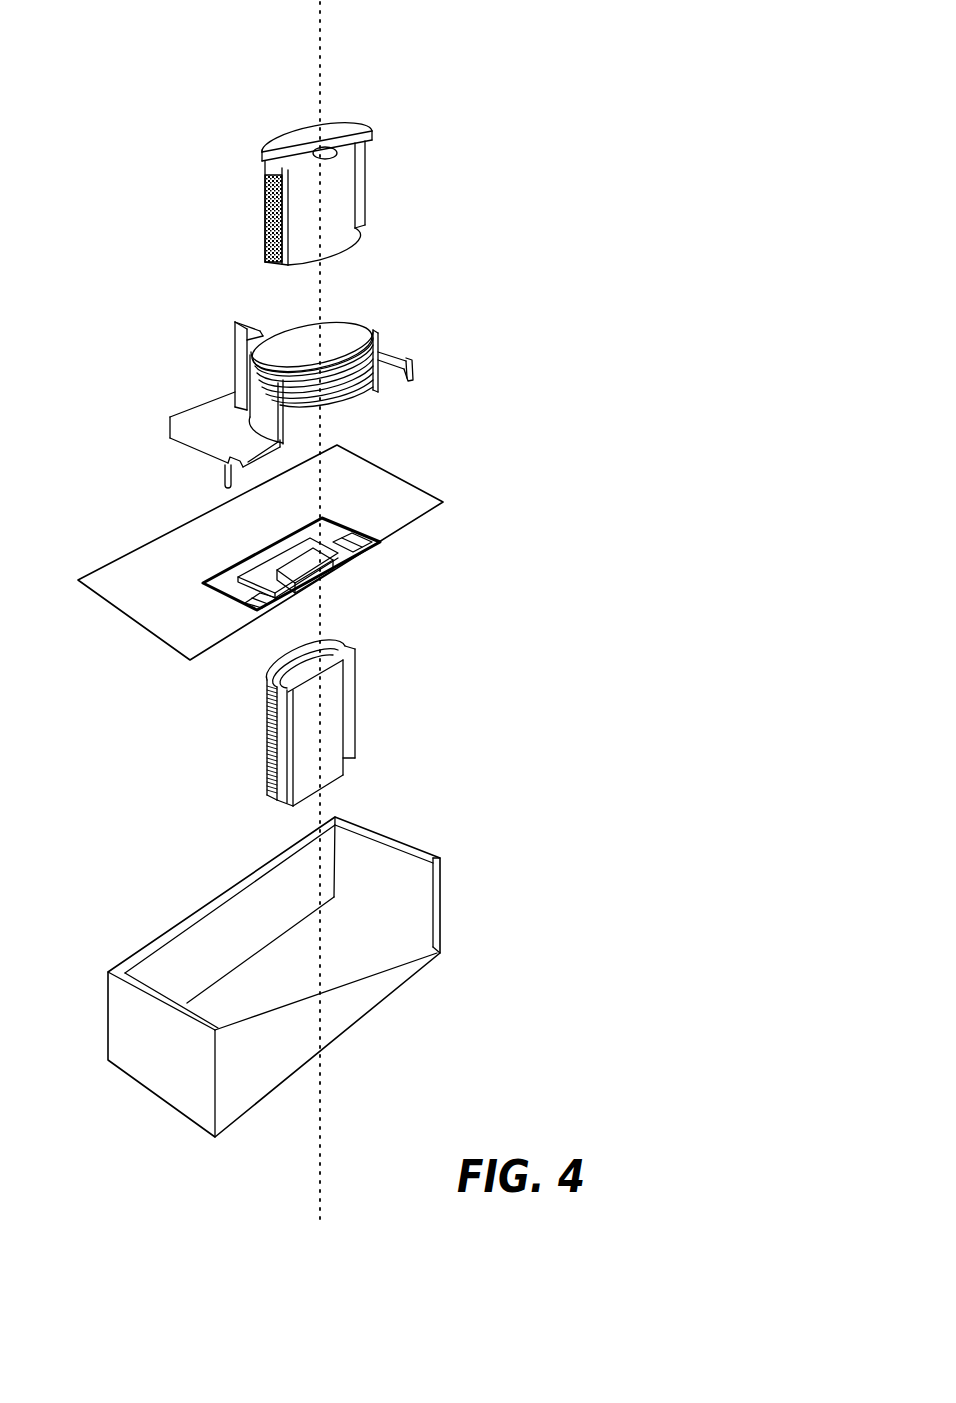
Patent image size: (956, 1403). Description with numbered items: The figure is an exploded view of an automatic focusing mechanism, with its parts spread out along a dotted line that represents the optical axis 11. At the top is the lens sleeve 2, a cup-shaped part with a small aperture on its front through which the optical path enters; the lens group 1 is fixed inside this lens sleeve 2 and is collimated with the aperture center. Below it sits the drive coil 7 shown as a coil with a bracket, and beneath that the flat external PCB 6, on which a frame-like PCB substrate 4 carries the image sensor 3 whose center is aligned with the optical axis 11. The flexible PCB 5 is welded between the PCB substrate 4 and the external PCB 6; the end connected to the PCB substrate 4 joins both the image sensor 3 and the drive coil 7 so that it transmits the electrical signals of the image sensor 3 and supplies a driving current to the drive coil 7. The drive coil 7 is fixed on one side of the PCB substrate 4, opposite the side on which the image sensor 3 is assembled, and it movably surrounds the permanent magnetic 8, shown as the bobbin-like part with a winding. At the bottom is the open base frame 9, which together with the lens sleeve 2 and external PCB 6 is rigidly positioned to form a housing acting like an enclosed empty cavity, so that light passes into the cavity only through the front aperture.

The lens group 1 is at (330, 148).
The lens sleeve 2 is at (353, 323).
The image sensor 3 is at (312, 567).
The PCB substrate 4 is at (345, 552).
The flexible PCB 5 is at (362, 531).
The external PCB 6 is at (417, 492).
The drive coil 7 is at (265, 745).
The permanent magnetic 8 is at (322, 700).
The base frame 9 is at (403, 843).
The optical axis 11 is at (325, 1106).